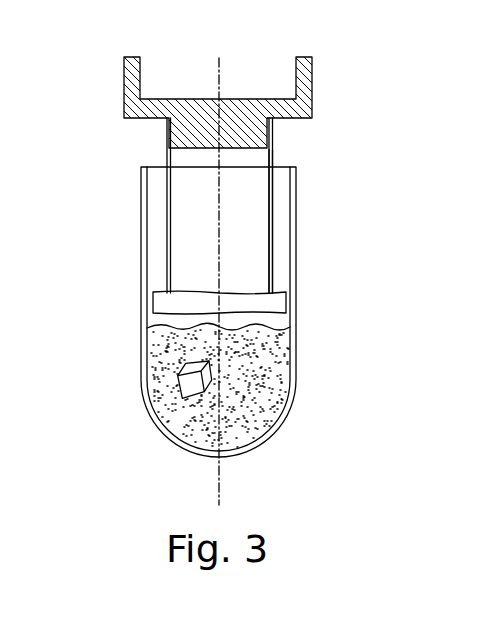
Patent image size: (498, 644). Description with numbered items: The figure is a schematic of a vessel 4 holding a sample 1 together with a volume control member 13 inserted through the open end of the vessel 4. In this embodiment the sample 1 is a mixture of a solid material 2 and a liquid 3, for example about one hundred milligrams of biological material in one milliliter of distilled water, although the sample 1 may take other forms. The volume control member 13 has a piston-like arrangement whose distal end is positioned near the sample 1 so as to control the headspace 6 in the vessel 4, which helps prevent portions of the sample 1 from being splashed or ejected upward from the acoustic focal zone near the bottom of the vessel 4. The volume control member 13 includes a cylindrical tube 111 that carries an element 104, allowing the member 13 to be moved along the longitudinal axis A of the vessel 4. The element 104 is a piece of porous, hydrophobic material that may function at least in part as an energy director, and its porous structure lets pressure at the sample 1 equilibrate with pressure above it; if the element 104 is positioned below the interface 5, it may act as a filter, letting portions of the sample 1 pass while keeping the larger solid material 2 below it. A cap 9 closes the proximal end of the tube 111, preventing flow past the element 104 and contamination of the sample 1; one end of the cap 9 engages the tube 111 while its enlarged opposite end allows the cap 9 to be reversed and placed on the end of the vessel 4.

The longitudinal axis A is at (219, 69).
The cap 9 is at (310, 101).
The volume control member 13 is at (276, 212).
The cylindrical tube 111 is at (274, 155).
The vessel 4 is at (141, 271).
The element 104 is at (286, 293).
The headspace 6 is at (242, 318).
The interface 5 is at (278, 353).
The liquid 3 is at (152, 348).
The sample 1 is at (150, 374).
The solid material 2 is at (183, 392).